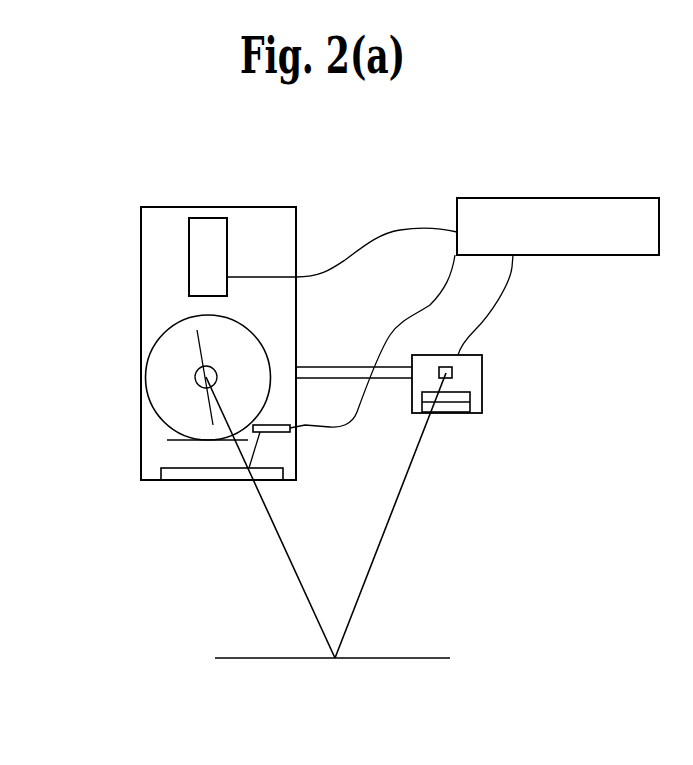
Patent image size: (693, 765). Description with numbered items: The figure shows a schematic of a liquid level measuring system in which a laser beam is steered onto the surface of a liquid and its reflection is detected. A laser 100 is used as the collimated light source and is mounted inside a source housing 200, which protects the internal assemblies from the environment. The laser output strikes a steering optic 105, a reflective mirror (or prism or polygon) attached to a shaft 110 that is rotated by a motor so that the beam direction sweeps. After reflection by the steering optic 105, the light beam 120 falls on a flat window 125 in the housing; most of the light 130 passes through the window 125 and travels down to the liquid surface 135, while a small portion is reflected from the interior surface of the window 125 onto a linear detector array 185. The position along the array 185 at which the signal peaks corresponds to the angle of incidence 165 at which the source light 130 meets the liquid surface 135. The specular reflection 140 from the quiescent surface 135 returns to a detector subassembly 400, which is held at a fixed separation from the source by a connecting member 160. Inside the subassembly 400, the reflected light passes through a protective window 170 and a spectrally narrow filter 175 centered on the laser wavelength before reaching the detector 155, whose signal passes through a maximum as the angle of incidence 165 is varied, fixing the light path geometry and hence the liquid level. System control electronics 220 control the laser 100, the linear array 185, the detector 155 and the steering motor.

The source housing 200 is at (241, 207).
The laser 100 is at (250, 252).
The steering optic 105 is at (178, 350).
The shaft 110 is at (183, 385).
The light beam 120 is at (215, 340).
The window 125 is at (220, 485).
The linear detector array 185 is at (270, 432).
The transmitted light 130 is at (278, 538).
The specular reflection 140 is at (372, 552).
The angle α 165 is at (282, 638).
The liquid surface 135 is at (252, 658).
The connecting member 160 is at (363, 367).
The detector subassembly 400 is at (487, 353).
The detector 155 is at (446, 367).
The spectrally narrow filter 175 is at (482, 396).
The window 170 is at (482, 408).
The system control electronics 220 is at (573, 255).